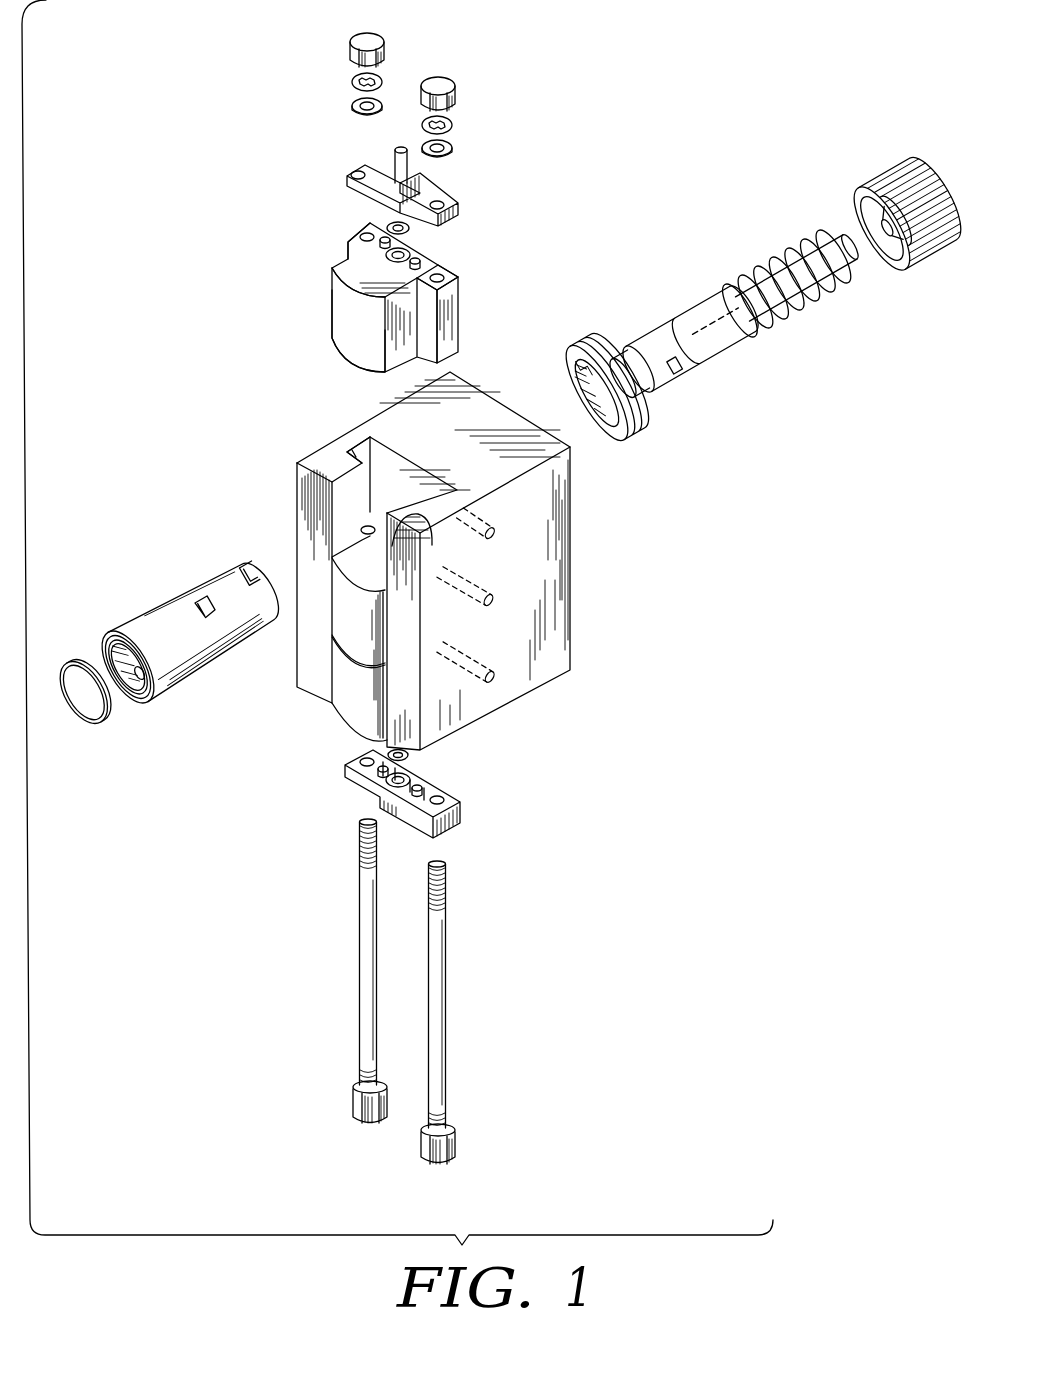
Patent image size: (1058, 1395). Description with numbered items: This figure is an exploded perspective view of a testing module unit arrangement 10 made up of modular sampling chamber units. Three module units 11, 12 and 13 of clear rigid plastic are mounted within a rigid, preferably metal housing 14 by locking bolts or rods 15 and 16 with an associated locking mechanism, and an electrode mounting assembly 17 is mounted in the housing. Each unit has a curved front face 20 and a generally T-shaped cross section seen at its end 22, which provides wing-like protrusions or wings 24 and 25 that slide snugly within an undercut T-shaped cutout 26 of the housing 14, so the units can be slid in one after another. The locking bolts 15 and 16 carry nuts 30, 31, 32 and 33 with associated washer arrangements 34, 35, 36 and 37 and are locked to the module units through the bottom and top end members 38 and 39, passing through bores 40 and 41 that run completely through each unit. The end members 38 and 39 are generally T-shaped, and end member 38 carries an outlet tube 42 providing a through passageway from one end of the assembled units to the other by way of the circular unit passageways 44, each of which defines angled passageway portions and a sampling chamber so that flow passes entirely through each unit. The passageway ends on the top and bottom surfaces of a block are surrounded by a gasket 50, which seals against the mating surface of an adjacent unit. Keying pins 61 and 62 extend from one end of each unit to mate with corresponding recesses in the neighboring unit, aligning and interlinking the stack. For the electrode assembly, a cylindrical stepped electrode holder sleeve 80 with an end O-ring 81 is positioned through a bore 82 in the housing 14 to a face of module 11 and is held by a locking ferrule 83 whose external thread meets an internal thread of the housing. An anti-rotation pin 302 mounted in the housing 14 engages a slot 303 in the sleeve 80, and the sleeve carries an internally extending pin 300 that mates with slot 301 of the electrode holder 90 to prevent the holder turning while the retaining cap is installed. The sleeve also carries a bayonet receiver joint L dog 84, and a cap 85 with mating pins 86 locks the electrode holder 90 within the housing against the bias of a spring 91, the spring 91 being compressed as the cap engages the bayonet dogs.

The testing module unit arrangement 10 is at (617, 797).
The module unit 11 is at (330, 309).
The module unit 12 is at (363, 616).
The module unit 13 is at (363, 692).
The housing 14 is at (552, 656).
The locking bolt 15 is at (362, 905).
The locking bolt 16 is at (445, 956).
The electrode mounting assembly 17 is at (751, 298).
The front face 20 is at (350, 327).
The end 22 is at (362, 278).
The wing 24 is at (460, 312).
The wing 25 is at (348, 248).
The T-shaped cutout 26 is at (353, 450).
The nut 30 is at (357, 1115).
The nut 31 is at (428, 1157).
The nut 32 is at (373, 35).
The nut 33 is at (450, 84).
The washer arrangement 34 is at (352, 106).
The washer arrangement 35 is at (452, 148).
The washer arrangement 36 is at (448, 1126).
The washer arrangement 37 is at (356, 1083).
The end member 38 is at (462, 812).
The end member 39 is at (428, 198).
The bore 40 is at (372, 226).
The bore 41 is at (448, 272).
The outlet tube 42 is at (394, 153).
The unit passageway 44 is at (410, 250).
The gasket 50 is at (390, 226).
The pin 61 is at (425, 258).
The pin 62 is at (367, 267).
The electrode holder sleeve 80 is at (178, 635).
The O-ring 81 is at (65, 668).
The bore 82 is at (403, 470).
The locking ferrule 83 is at (580, 350).
The bayonet receiver joint L dog 84 is at (253, 572).
The cap 85 is at (873, 210).
The mating pin 86 is at (876, 232).
The electrode holder 90 is at (684, 343).
The spring 91 is at (752, 278).
The pin 300 is at (140, 684).
The slot 301 is at (663, 346).
The anti-rotation device 302 is at (490, 595).
The slot 303 is at (203, 605).